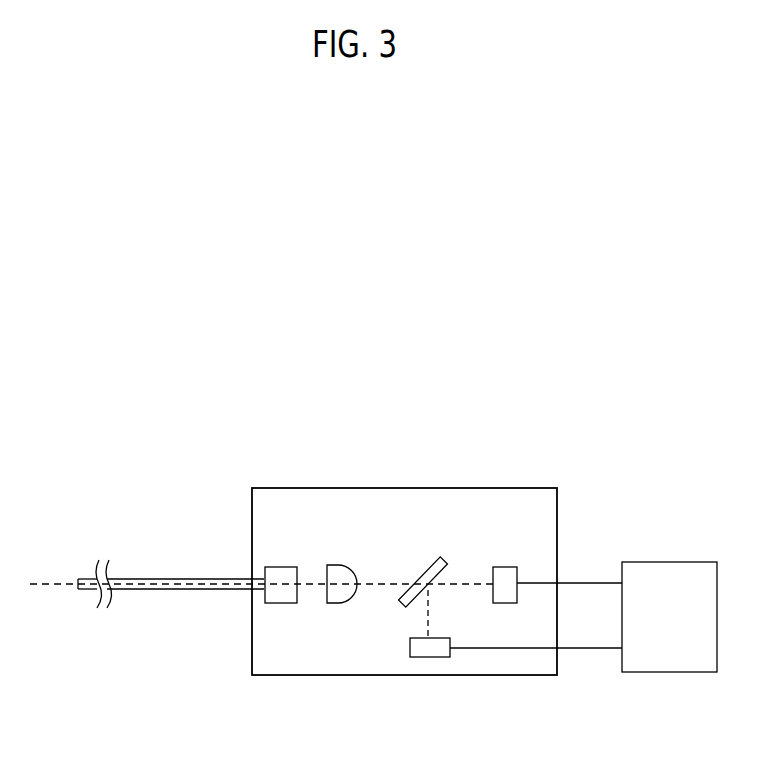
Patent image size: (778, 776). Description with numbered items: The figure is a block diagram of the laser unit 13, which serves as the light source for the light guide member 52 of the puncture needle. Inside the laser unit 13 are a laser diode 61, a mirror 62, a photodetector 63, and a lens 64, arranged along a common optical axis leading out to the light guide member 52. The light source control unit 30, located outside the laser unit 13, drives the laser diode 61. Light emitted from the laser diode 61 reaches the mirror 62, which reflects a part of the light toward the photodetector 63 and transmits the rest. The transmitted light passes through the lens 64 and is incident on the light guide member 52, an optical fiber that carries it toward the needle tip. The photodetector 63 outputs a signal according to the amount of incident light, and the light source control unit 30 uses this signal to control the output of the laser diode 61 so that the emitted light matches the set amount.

The laser unit 13 is at (543, 488).
The light source control unit 30 is at (696, 562).
The light guide member 52 is at (218, 578).
The laser diode 61 is at (512, 567).
The mirror 62 is at (419, 572).
The photodetector 63 is at (419, 657).
The lens 64 is at (334, 565).